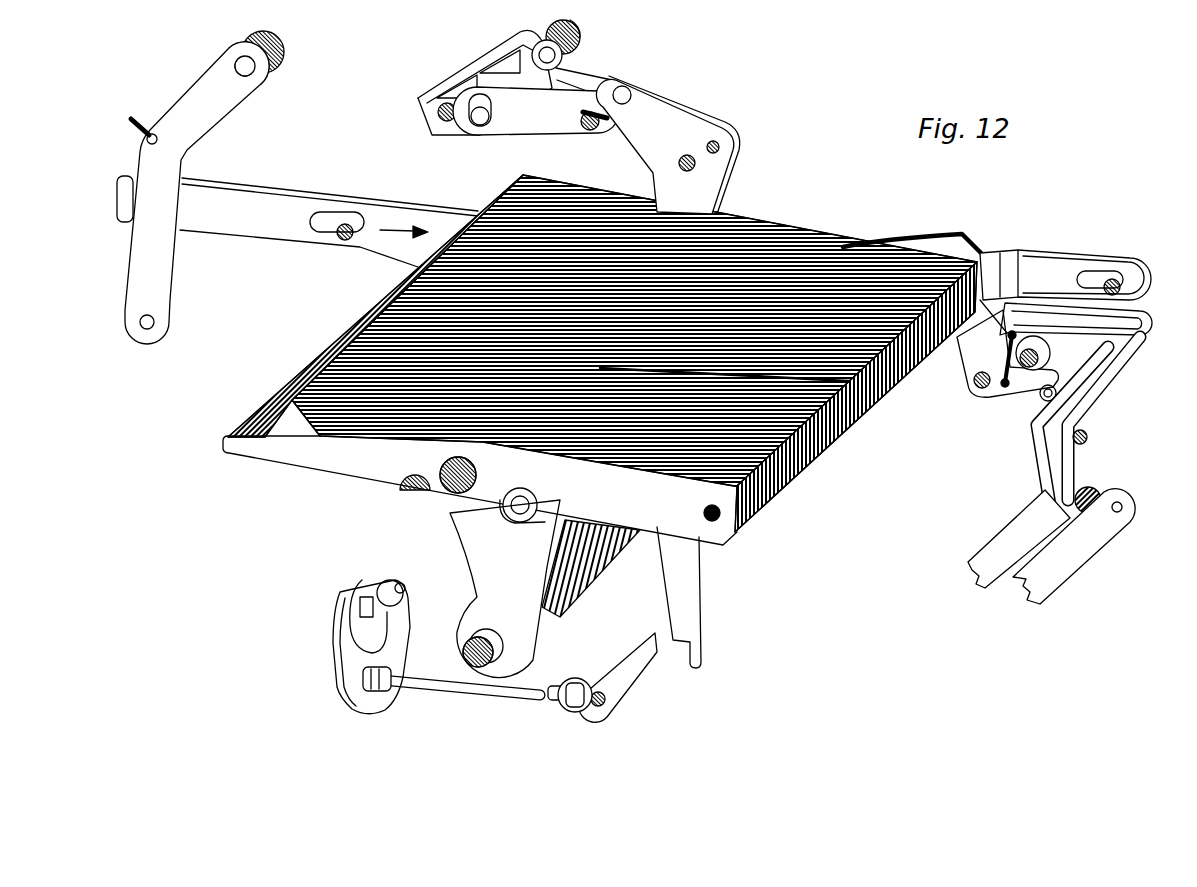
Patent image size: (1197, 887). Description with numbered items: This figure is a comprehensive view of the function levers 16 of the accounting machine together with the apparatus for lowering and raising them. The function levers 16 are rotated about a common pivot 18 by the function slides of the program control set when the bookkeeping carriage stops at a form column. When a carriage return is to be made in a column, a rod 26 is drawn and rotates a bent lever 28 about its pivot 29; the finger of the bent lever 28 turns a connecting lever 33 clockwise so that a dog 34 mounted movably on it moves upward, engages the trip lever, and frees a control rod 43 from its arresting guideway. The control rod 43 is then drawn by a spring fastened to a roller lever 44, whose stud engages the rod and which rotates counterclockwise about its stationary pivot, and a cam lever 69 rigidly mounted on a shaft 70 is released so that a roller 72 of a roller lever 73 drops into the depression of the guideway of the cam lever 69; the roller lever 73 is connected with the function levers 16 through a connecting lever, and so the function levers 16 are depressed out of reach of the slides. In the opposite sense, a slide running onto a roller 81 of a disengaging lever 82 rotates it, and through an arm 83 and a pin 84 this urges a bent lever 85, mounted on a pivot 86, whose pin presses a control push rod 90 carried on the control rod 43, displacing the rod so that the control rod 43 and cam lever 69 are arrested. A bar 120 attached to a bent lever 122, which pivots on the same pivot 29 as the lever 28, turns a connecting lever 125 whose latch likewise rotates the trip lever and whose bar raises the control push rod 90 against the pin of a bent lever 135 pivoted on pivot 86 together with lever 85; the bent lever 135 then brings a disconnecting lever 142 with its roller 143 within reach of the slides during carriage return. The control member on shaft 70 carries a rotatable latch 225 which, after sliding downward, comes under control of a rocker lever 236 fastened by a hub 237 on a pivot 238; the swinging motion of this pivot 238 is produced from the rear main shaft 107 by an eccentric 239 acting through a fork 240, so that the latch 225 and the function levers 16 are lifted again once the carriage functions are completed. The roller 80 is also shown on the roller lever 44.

The function levers 16 is at (276, 448).
The common pivot 18 is at (478, 476).
The rod 26 is at (1010, 548).
The bent lever 28 is at (1053, 387).
The pivot 29 is at (1089, 437).
The connecting lever 33 is at (1071, 340).
The dog 34 is at (965, 347).
The control rod 43 is at (268, 200).
The roller lever 44 is at (197, 118).
The cam lever 69 is at (527, 614).
The shaft 70 is at (600, 553).
The roller 72 is at (540, 508).
The roller lever 73 is at (430, 491).
The roller 80 is at (269, 63).
The roller 81 is at (563, 58).
The disengaging lever 82 is at (522, 47).
The arm 83 is at (527, 120).
The pin 84 is at (587, 133).
The bent lever 85 is at (650, 140).
The pivot 86 is at (696, 166).
The control push rod 90 is at (945, 240).
The rear main shaft 107 is at (389, 582).
The bar 120 is at (1067, 553).
The bent lever 122 is at (1100, 497).
The connecting lever 125 is at (1118, 328).
The bent lever 135 is at (707, 127).
The disconnecting lever 142 is at (510, 55).
The roller 143 is at (577, 42).
The latch 225 is at (687, 567).
The rocker lever 236 is at (643, 657).
The hub 237 is at (583, 693).
The pivot 238 is at (443, 683).
The eccentric 239 is at (372, 596).
The fork 240 is at (340, 622).